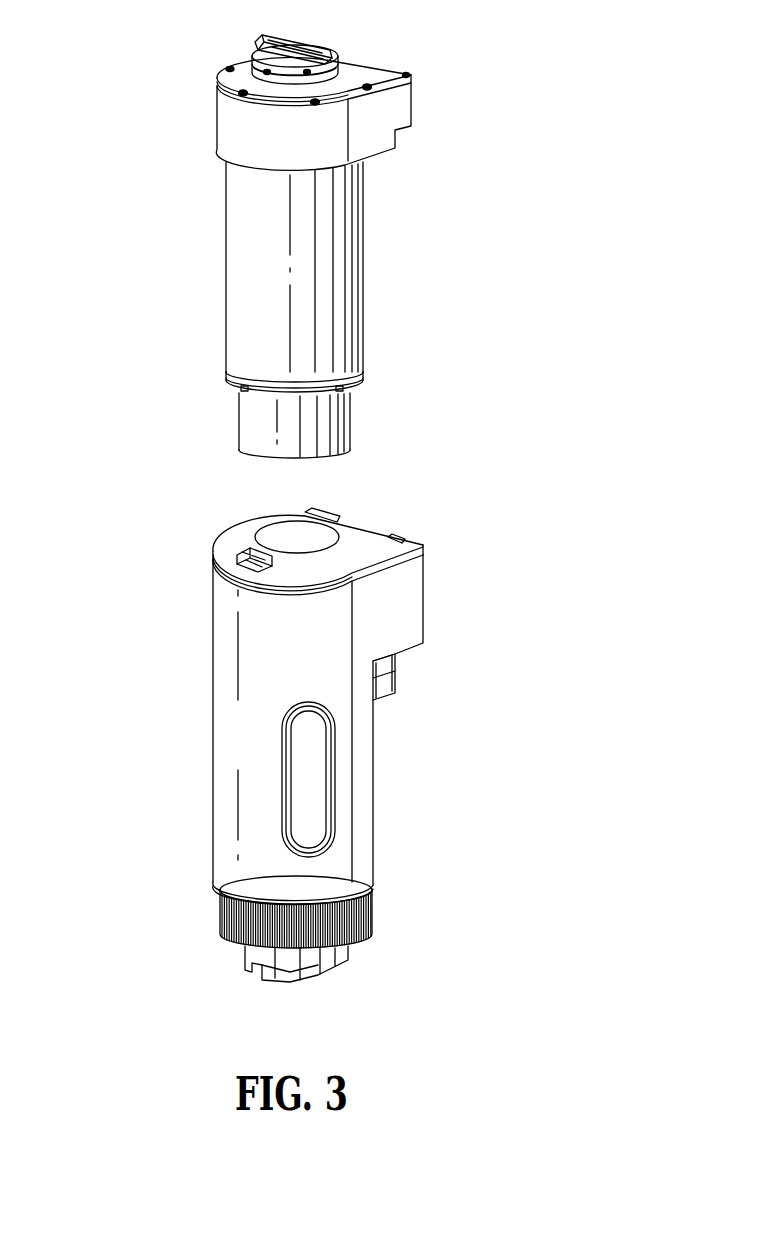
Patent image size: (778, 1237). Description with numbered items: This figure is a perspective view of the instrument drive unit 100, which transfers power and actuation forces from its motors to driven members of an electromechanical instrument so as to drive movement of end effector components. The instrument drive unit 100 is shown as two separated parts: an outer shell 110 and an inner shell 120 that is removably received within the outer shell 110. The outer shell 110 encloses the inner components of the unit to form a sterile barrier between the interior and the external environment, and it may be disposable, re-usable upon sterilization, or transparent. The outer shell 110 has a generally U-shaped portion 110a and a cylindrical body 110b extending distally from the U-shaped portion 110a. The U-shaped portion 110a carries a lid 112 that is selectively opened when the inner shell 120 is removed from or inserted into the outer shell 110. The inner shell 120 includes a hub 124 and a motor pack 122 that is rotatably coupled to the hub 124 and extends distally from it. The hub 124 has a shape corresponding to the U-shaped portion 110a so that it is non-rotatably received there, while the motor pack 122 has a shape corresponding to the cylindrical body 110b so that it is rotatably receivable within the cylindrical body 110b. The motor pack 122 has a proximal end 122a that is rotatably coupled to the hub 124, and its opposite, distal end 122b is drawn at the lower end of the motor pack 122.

The instrument drive unit 100 is at (198, 1003).
The outer shell 110 is at (446, 650).
The U-shaped portion 110a is at (400, 603).
The cylindrical body 110b is at (363, 753).
The lid 112 is at (350, 548).
The inner shell 120 is at (436, 150).
The motor pack 122 is at (369, 267).
The proximal end 122a is at (365, 177).
The lower portion of pump cylinder 122b is at (360, 413).
The hub 124 is at (413, 105).